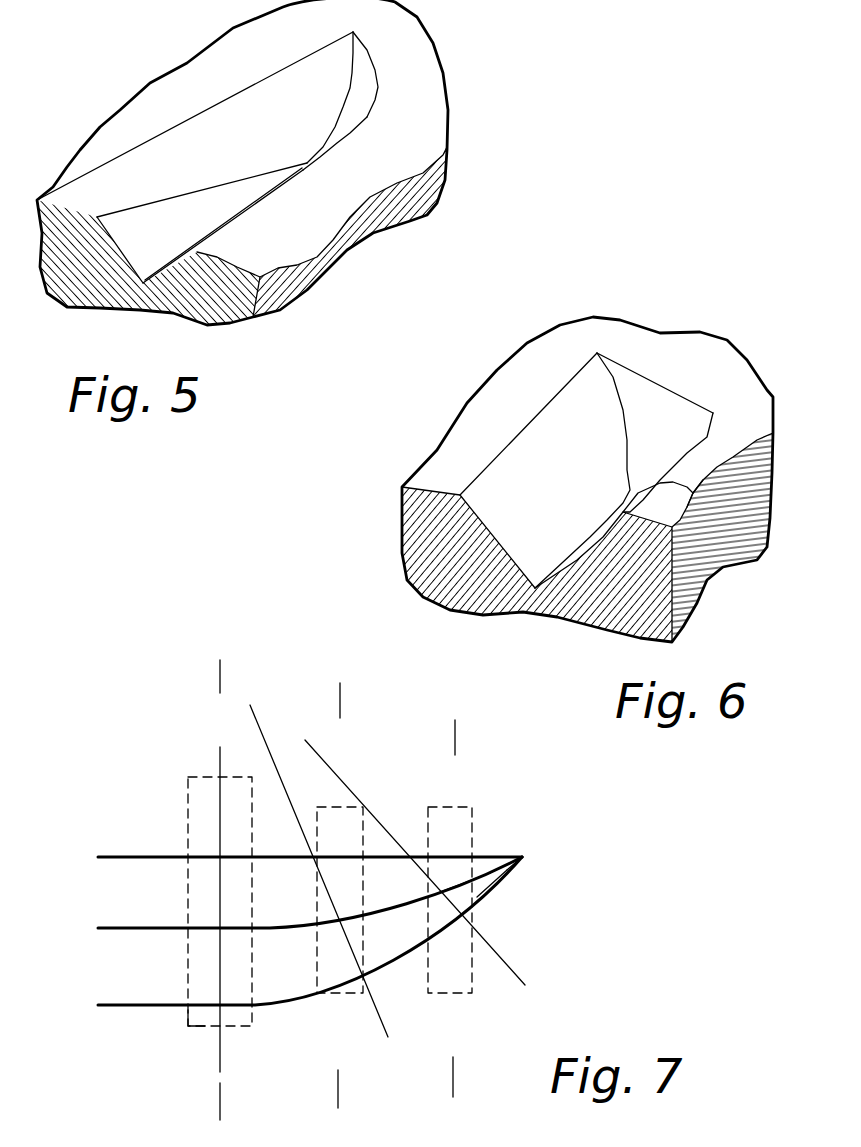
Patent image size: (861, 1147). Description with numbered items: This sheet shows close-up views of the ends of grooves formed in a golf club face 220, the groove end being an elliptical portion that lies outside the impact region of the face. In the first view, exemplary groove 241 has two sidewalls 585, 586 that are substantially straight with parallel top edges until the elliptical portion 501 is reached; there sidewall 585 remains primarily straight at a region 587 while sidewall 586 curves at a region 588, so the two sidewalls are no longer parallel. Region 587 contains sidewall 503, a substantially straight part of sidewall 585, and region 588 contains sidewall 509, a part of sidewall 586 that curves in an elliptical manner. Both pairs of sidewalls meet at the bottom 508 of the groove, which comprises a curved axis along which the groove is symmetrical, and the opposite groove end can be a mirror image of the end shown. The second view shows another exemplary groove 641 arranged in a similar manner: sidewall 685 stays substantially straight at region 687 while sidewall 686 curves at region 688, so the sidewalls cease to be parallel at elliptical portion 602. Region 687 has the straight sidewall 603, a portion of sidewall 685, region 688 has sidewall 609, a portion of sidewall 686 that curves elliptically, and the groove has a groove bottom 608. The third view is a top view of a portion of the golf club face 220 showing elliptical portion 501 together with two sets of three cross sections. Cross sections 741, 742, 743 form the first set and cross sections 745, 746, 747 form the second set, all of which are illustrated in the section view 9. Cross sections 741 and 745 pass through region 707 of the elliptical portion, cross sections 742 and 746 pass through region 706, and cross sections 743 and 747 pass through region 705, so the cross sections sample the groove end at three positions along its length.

In FIG. 5, the golf club face 220 is at (152, 97).
In FIG. 5, the groove 241 is at (378, 68).
In FIG. 7, the groove 241 is at (513, 895).
In FIG. 5, the elliptical portion 501 is at (347, 63).
In FIG. 7, the elliptical portion 501 is at (497, 855).
In FIG. 5, the sidewall 503 is at (307, 125).
In FIG. 7, the sidewall 503 is at (205, 873).
In FIG. 5, the bottom 508 is at (350, 85).
In FIG. 7, the bottom 508 is at (222, 927).
In FIG. 5, the sidewall 509 is at (325, 152).
In FIG. 7, the sidewall 509 is at (172, 987).
In FIG. 5, the sidewall 585 is at (122, 197).
In FIG. 5, the sidewall 586 is at (257, 208).
In FIG. 5, the region 587 is at (287, 77).
In FIG. 5, the region 588 is at (370, 118).
In FIG. 6, the elliptical portion 602 is at (647, 382).
In FIG. 6, the sidewall 603 is at (610, 438).
In FIG. 6, the groove bottom 608 is at (583, 490).
In FIG. 6, the sidewall 609 is at (757, 502).
In FIG. 6, the groove 641 is at (673, 380).
In FIG. 6, the sidewall 685 is at (467, 487).
In FIG. 6, the sidewall 686 is at (735, 570).
In FIG. 6, the region 687 is at (577, 367).
In FIG. 6, the region 688 is at (707, 442).
In FIG. 7, the region 705 is at (472, 807).
In FIG. 7, the region 706 is at (317, 975).
In FIG. 7, the region 707 is at (190, 1023).
In FIG. 7, the cross section 741 is at (222, 1097).
In FIG. 7, the cross section 742 is at (340, 1082).
In FIG. 7, the cross section 743 is at (453, 1068).
In FIG. 7, the cross section 745 is at (220, 807).
In FIG. 7, the cross section 746 is at (292, 807).
In FIG. 7, the cross section 747 is at (490, 942).
In FIG. 7, the section view 9 is at (202, 672).